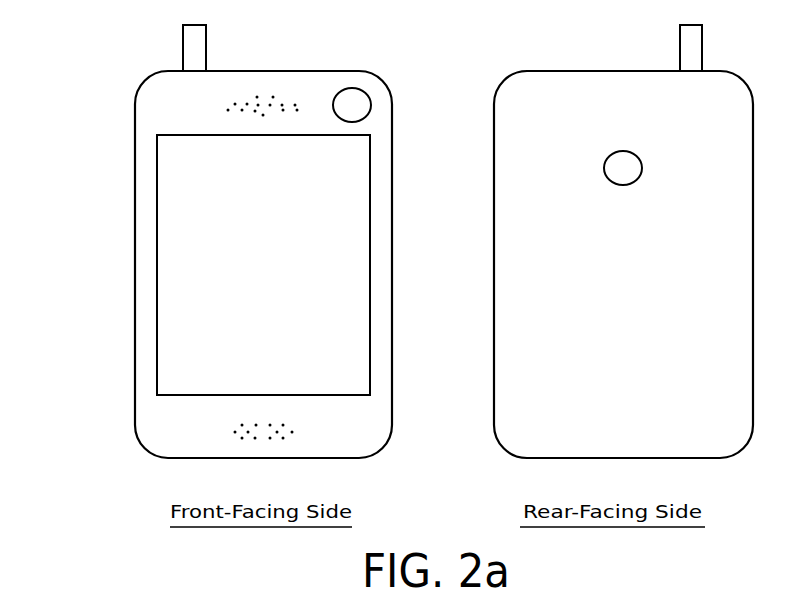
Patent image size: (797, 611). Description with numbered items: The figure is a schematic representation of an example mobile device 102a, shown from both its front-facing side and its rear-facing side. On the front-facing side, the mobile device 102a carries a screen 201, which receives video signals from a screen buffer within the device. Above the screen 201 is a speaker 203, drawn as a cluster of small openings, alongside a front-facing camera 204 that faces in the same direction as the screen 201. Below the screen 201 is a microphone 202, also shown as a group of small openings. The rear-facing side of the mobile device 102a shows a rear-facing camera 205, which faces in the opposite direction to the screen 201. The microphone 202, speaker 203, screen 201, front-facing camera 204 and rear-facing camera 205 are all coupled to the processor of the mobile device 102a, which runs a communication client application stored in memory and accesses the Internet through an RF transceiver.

The mobile device 102a is at (135, 220).
The screen 201 is at (157, 324).
The microphone 202 is at (263, 433).
The speaker 203 is at (263, 100).
The front-facing camera 204 is at (353, 88).
The rear-facing camera 205 is at (623, 186).